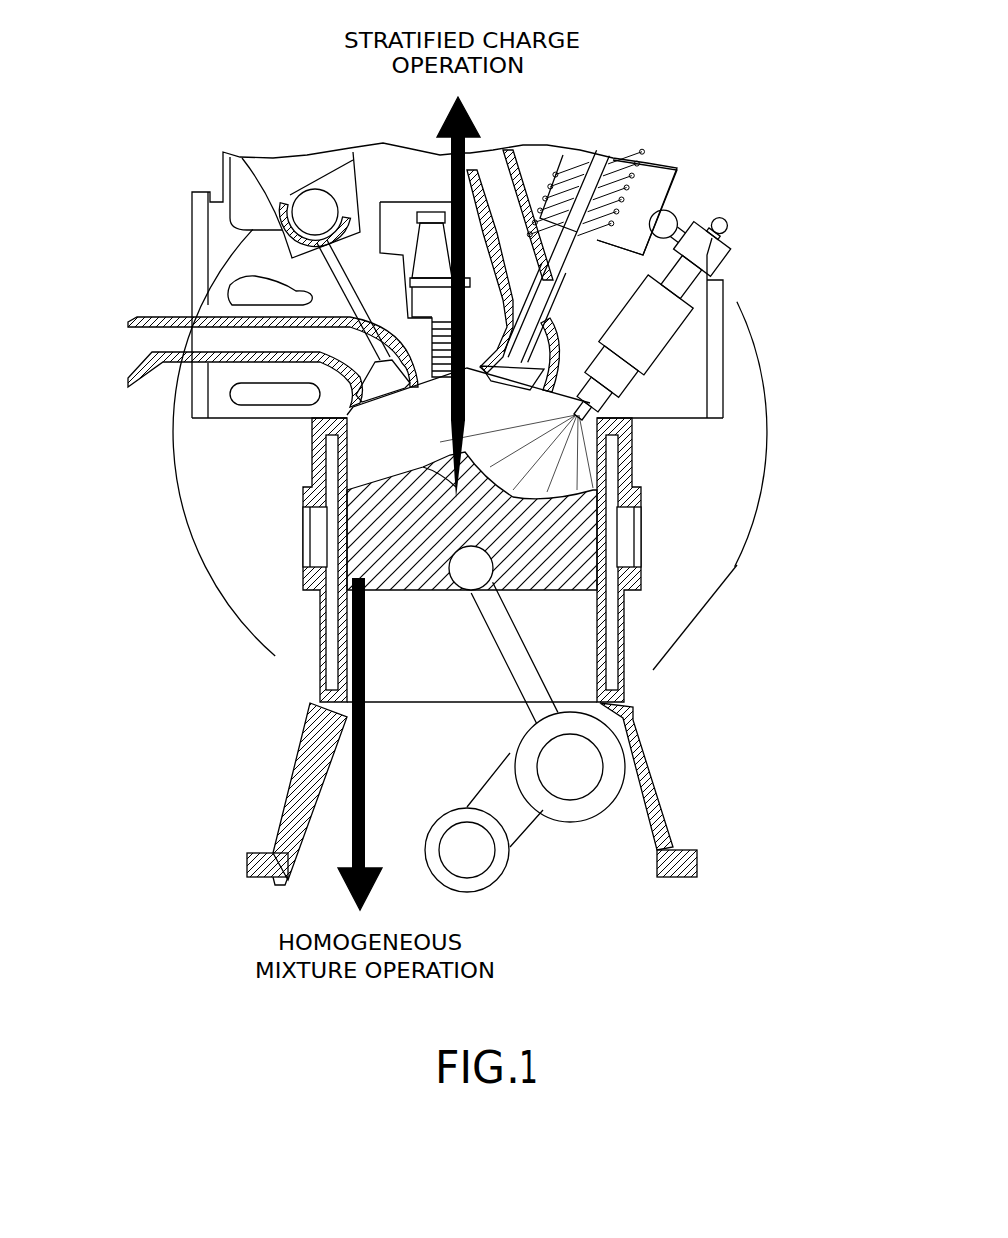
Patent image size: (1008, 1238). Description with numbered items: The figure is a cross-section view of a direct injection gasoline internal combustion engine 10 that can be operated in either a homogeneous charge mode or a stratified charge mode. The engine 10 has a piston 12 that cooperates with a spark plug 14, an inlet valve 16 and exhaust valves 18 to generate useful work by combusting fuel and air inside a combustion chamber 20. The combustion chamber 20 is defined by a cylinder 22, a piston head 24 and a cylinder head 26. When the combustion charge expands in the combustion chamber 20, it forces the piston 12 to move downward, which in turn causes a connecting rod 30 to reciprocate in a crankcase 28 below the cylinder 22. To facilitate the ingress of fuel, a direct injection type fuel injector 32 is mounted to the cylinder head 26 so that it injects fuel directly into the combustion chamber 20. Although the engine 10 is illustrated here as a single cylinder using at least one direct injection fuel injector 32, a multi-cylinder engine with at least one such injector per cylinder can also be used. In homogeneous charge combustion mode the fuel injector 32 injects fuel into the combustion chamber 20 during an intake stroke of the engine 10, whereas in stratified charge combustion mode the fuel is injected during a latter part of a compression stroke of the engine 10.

The direct injection gasoline internal combustion engine 10 is at (67, 178).
The piston 12 is at (600, 550).
The spark plug 14 is at (353, 398).
The inlet valve 16 is at (560, 352).
The exhaust valves 18 is at (217, 322).
The combustion chamber 20 is at (313, 453).
The cylinder 22 is at (620, 660).
The piston head 24 is at (637, 485).
The cylinder head 26 is at (663, 390).
The crankcase 28 is at (313, 645).
The connecting rod 30 is at (513, 655).
The direct injection type fuel injector 32 is at (670, 318).